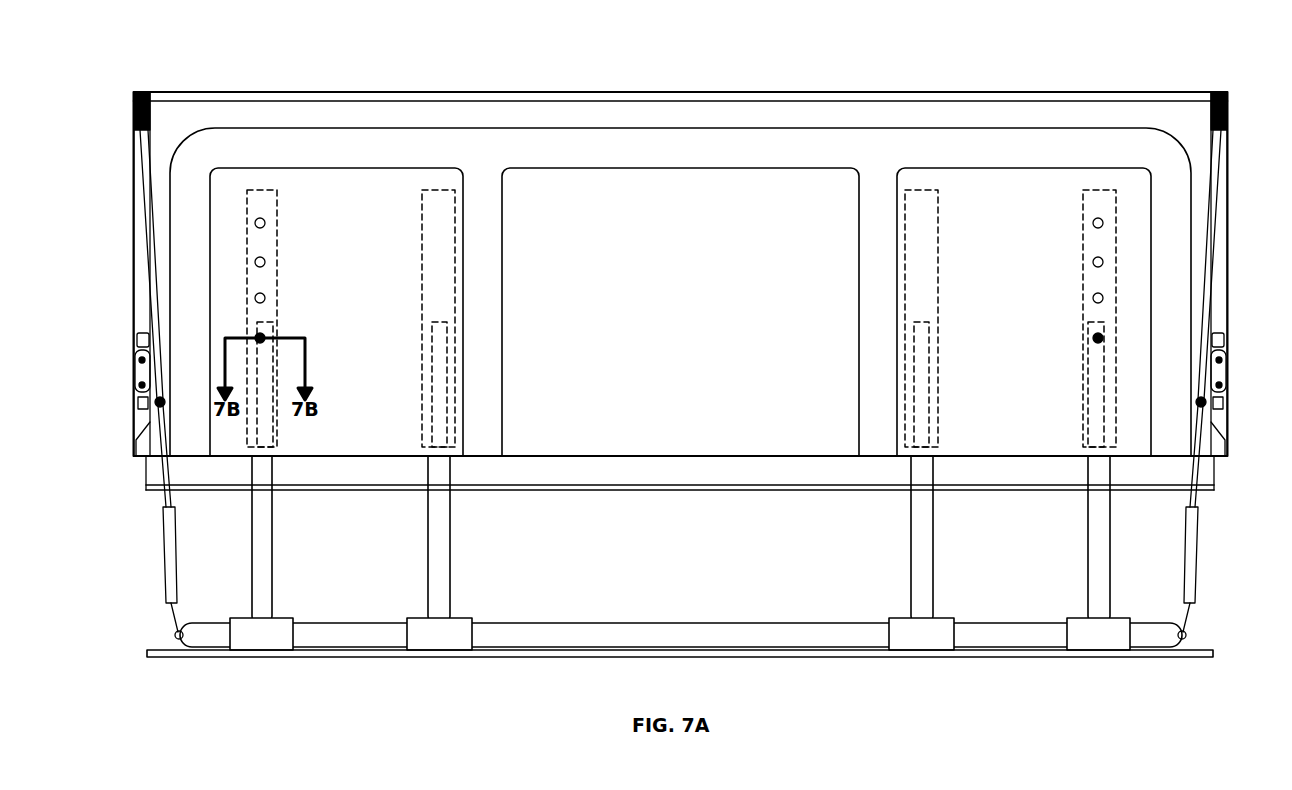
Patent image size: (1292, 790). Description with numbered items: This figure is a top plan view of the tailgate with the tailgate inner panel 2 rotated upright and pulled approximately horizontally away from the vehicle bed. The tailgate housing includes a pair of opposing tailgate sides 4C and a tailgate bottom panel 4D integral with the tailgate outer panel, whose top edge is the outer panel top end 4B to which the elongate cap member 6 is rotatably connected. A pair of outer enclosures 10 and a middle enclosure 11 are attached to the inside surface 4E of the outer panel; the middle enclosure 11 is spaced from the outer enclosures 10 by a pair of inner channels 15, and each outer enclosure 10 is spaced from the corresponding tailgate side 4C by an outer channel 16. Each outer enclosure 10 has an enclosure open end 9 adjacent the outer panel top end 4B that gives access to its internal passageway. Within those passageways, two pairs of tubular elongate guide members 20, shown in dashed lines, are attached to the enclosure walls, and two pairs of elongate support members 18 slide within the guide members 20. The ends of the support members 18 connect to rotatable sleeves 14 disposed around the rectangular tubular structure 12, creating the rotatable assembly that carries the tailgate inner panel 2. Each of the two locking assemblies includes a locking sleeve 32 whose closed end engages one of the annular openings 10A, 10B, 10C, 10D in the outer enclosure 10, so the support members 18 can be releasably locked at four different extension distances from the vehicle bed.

The tailgate inner panel 2 is at (820, 657).
The outer panel top end 4B is at (147, 458).
The tailgate sides 4C is at (148, 240).
The tailgate bottom panel 4D is at (796, 92).
The inside surface 4E is at (720, 150).
The elongate cap member 6 is at (148, 488).
The enclosure open end 9 is at (352, 458).
The outer enclosures 10 is at (333, 180).
The annular opening 10A is at (265, 335).
The annular opening 10B is at (265, 296).
The annular opening 10C is at (265, 260).
The annular opening 10D is at (265, 221).
The middle enclosure 11 is at (603, 180).
The rectangular tubular structure 12 is at (553, 648).
The rotatable sleeves 14 is at (258, 640).
The inner channels 15 is at (484, 197).
The outer channels 16 is at (187, 215).
The elongate support members 18 is at (267, 423).
The elongate guide members 20 is at (267, 192).
The locking sleeve 32 is at (266, 341).